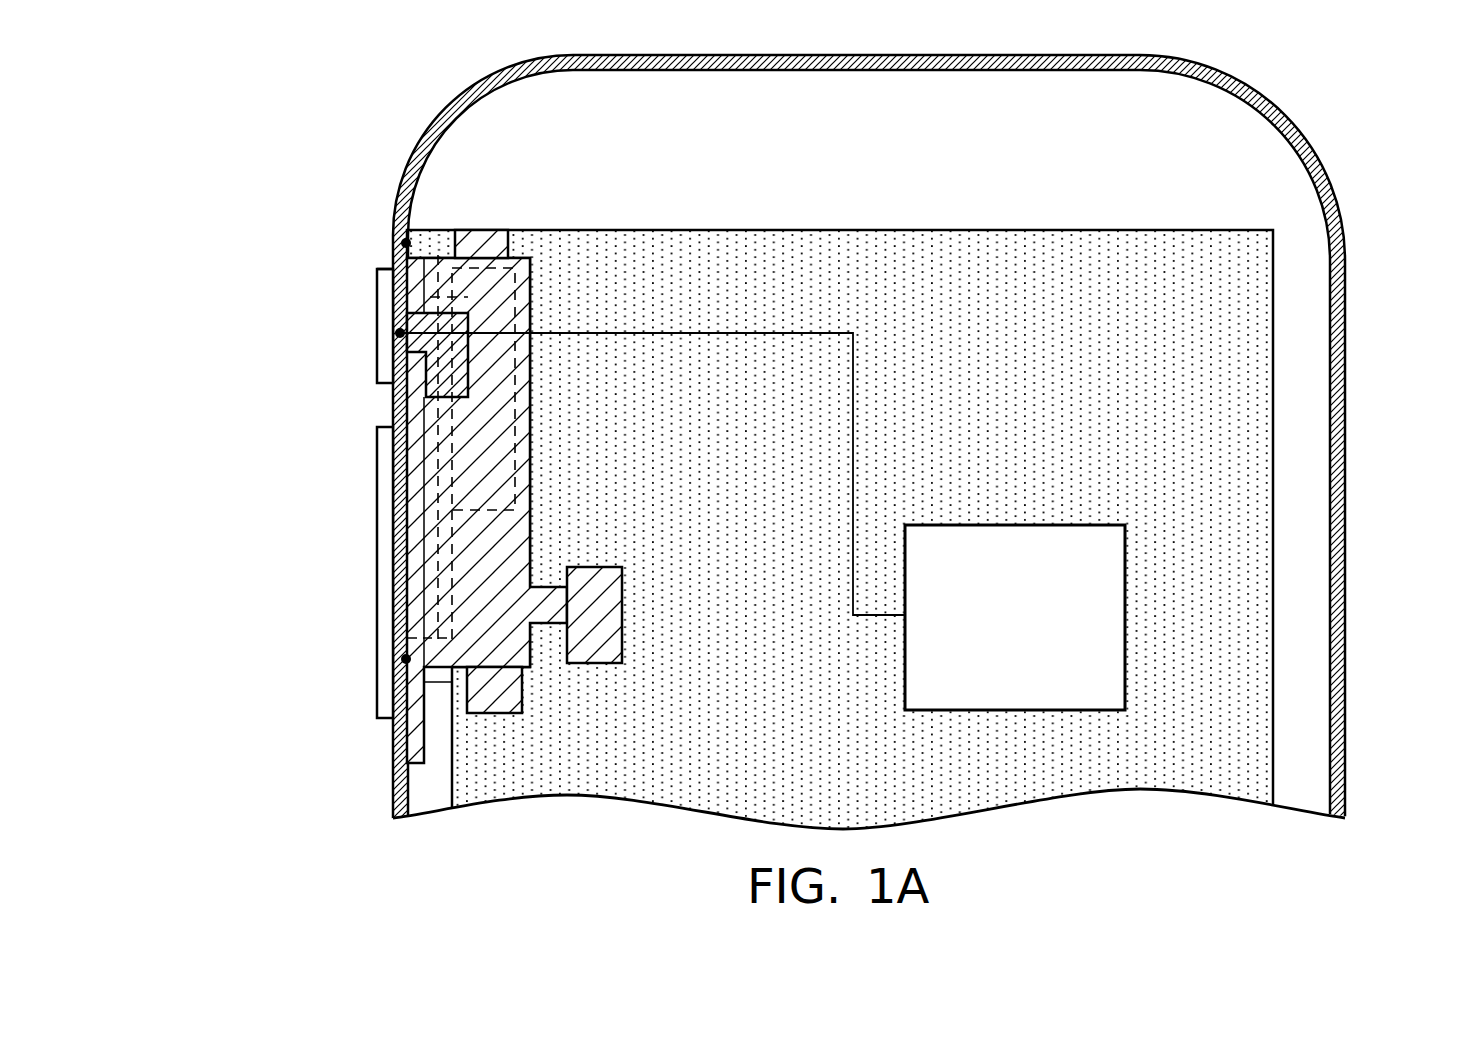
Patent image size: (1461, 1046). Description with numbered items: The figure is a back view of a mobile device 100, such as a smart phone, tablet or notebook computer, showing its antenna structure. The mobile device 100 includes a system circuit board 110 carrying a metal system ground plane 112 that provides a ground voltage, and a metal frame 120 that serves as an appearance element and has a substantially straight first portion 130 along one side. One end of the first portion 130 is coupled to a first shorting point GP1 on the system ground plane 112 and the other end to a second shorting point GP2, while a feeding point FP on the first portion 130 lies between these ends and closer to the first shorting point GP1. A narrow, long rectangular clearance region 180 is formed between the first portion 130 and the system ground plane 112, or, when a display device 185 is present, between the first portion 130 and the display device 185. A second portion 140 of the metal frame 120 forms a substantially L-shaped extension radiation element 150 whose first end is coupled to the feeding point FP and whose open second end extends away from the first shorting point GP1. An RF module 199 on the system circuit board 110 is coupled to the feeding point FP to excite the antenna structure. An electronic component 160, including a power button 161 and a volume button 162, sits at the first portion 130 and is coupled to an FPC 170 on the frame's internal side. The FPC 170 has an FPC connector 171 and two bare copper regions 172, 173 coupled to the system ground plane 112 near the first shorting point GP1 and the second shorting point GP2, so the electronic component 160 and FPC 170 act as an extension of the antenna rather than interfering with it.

The mobile device 100 is at (210, 52).
The system circuit board 110 is at (1250, 463).
The system ground plane 112 is at (377, 270).
The metal frame 120 is at (789, 447).
The first portion 130 is at (198, 165).
The second portion 140 is at (461, 262).
The extension radiation element 150 is at (472, 352).
The electronic component 160 is at (259, 493).
The power button 161 is at (393, 322).
The volume button 162 is at (393, 475).
The FPC 170 is at (472, 608).
The FPC connector 171 is at (590, 663).
The bare copper region 172 is at (486, 238).
The bare copper region 173 is at (495, 713).
The clearance region 180 is at (410, 548).
The display device 185 is at (438, 255).
The RF module 199 is at (1013, 525).
The first shorting point GP1 is at (401, 243).
The second shorting point GP2 is at (401, 659).
The feeding point FP is at (398, 336).